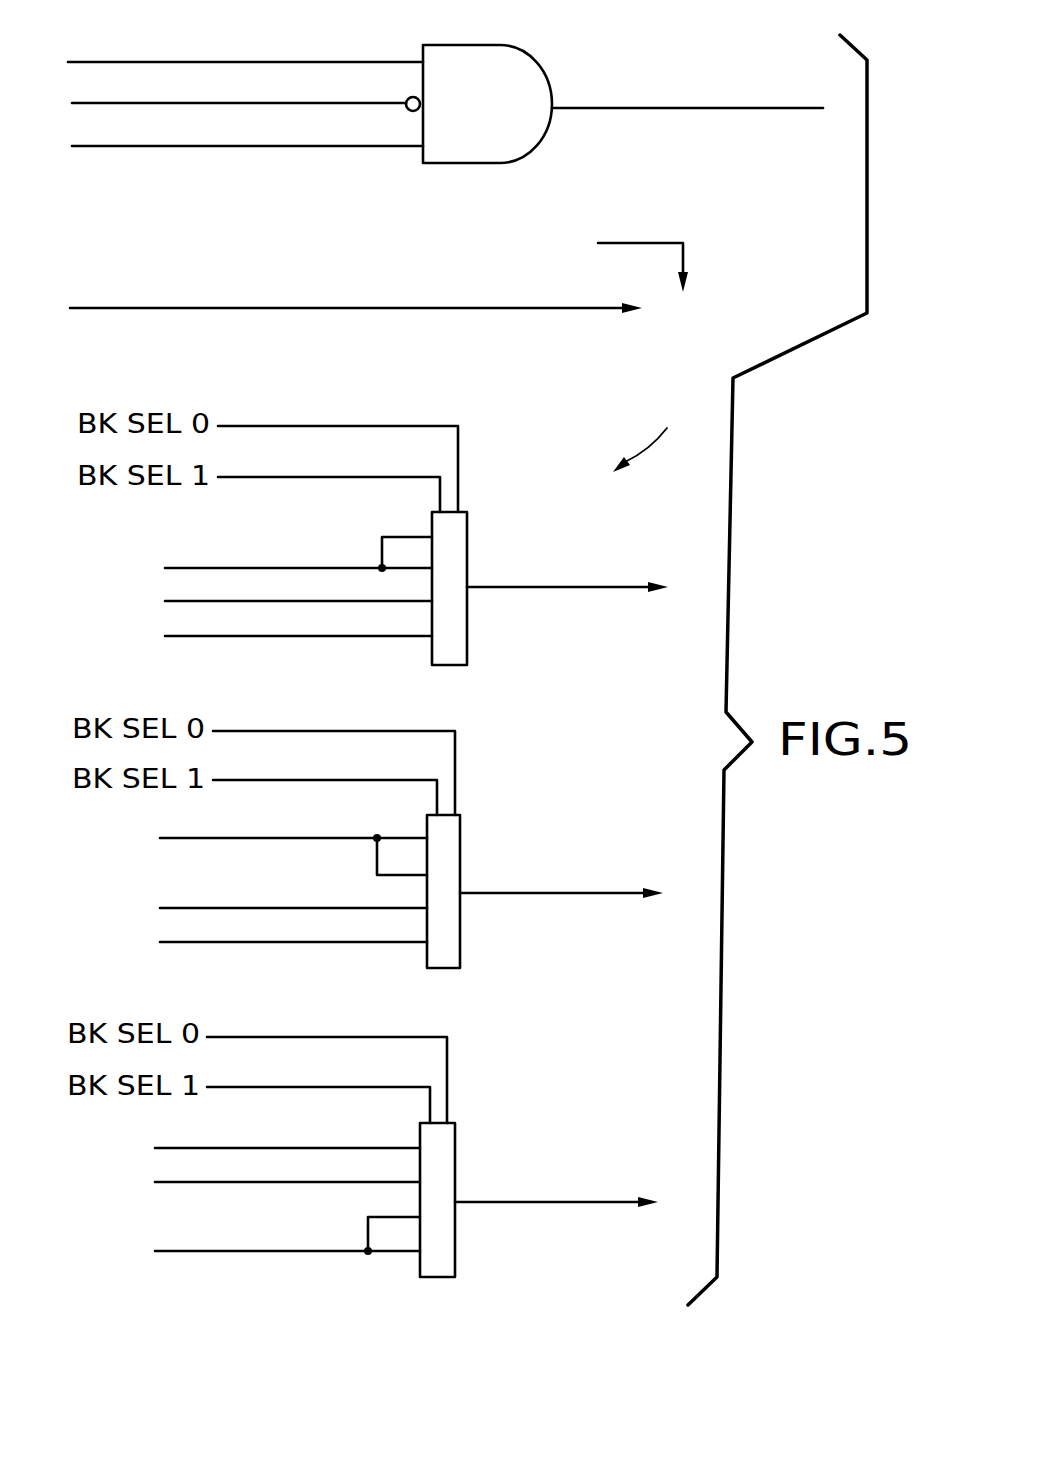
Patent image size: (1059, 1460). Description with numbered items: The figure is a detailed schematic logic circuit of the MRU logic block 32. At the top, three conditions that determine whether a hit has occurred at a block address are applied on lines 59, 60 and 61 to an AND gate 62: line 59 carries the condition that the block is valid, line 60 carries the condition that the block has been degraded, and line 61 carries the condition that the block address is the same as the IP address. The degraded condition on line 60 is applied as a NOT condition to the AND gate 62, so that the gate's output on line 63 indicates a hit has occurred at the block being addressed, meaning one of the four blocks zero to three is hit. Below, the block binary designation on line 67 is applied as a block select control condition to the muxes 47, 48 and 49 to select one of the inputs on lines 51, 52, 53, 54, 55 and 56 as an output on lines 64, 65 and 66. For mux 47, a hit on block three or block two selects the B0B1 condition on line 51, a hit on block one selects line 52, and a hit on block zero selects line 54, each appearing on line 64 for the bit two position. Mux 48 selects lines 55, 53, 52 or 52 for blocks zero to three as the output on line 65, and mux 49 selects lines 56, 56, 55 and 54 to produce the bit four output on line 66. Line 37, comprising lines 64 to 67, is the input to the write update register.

The MRU logic block 32 is at (690, 418).
The line 37 is at (540, 278).
The mux 47 is at (468, 538).
The mux 48 is at (463, 837).
The mux 49 is at (460, 1142).
The line 51 is at (227, 568).
The line 52 is at (298, 601).
The line 53 is at (270, 908).
The line 54 is at (307, 636).
The line 55 is at (327, 942).
The line 56 is at (295, 1251).
The line 59 is at (72, 62).
The line 60 is at (363, 105).
The line 61 is at (277, 146).
The AND gate 62 is at (538, 67).
The line 63 is at (797, 108).
The line 64 is at (563, 587).
The line 65 is at (488, 893).
The line 66 is at (553, 1202).
The line 67 is at (505, 308).